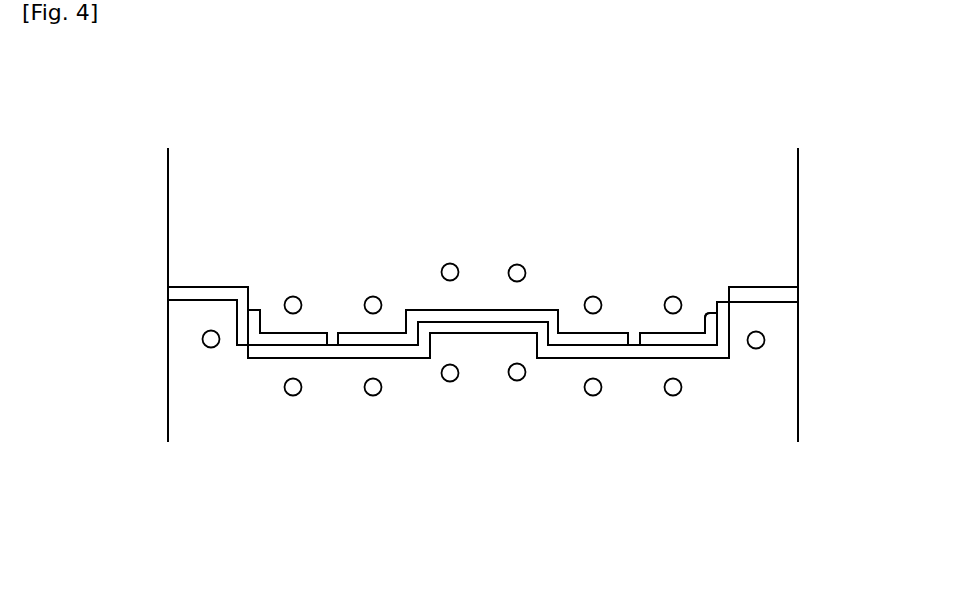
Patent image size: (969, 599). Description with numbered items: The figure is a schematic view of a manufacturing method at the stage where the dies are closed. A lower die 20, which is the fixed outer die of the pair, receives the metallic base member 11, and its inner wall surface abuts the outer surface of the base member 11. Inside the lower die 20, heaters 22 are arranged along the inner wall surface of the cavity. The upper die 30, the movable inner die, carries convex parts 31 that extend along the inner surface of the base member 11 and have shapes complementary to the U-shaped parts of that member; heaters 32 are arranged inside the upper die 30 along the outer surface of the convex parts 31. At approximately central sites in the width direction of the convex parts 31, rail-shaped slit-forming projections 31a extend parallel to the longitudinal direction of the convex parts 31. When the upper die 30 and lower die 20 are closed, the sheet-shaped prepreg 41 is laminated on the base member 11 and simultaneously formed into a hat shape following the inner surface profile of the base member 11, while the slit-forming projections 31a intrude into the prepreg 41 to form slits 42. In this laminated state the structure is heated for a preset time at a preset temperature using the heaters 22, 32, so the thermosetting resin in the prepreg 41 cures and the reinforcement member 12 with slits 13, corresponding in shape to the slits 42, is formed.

The upper die 30 is at (792, 185).
The lower die 20 is at (792, 397).
The base member 11 is at (792, 293).
The convex parts 31 is at (692, 323).
The slit-forming projections 31a is at (633, 347).
The prepreg 41 is at (258, 338).
The reinforcement member 12 is at (287, 327).
The slits 42 is at (635, 340).
The slits 13 is at (678, 329).
The heaters 32 is at (450, 264).
The heaters 22 is at (450, 382).